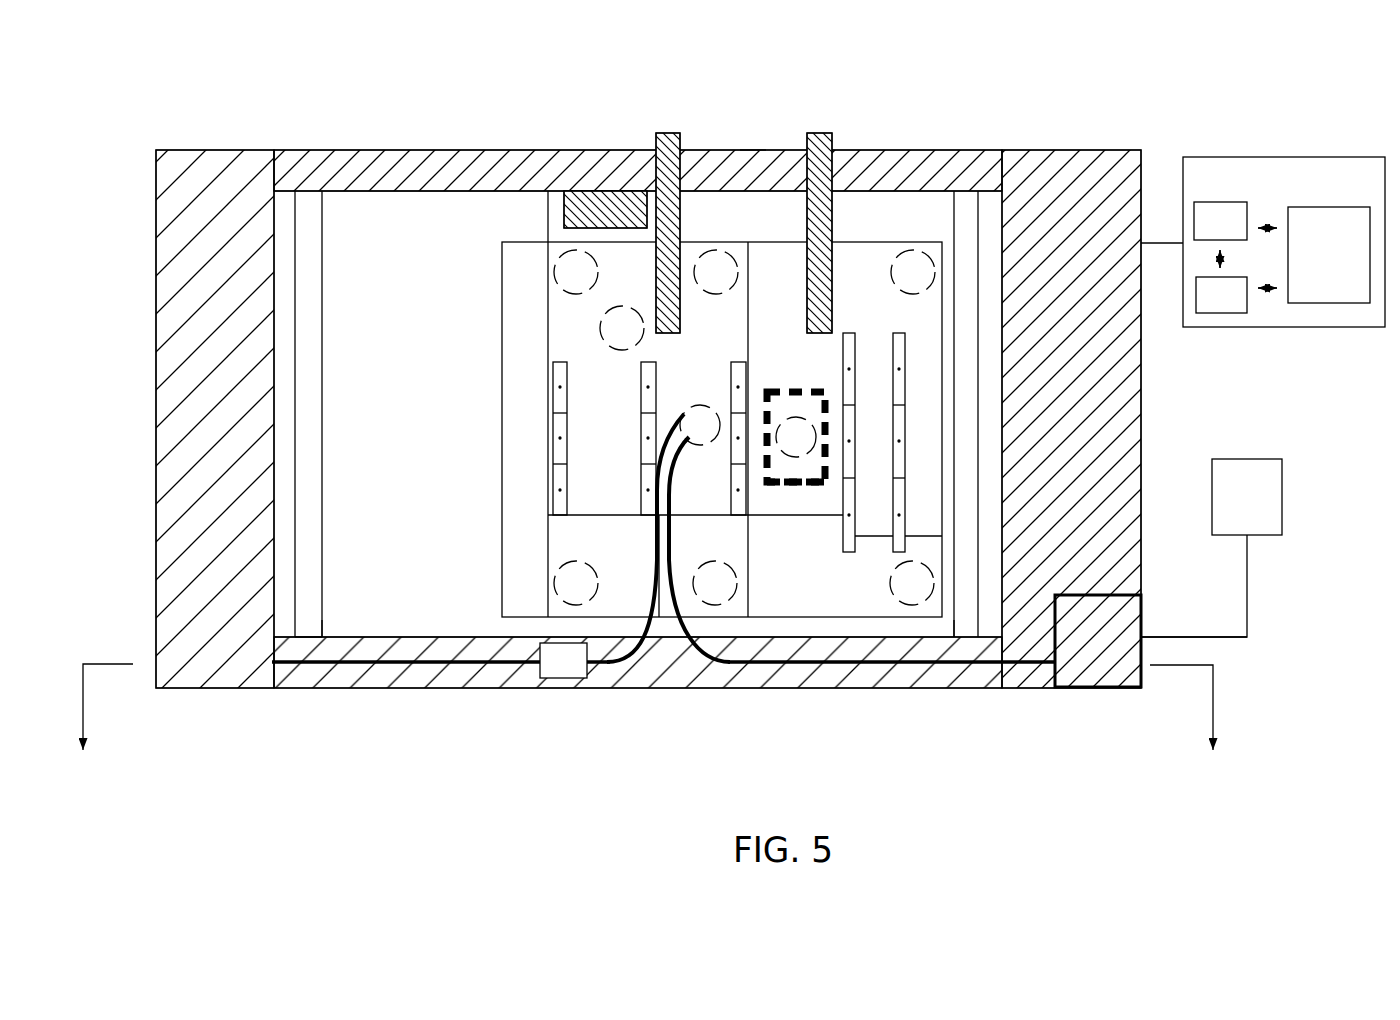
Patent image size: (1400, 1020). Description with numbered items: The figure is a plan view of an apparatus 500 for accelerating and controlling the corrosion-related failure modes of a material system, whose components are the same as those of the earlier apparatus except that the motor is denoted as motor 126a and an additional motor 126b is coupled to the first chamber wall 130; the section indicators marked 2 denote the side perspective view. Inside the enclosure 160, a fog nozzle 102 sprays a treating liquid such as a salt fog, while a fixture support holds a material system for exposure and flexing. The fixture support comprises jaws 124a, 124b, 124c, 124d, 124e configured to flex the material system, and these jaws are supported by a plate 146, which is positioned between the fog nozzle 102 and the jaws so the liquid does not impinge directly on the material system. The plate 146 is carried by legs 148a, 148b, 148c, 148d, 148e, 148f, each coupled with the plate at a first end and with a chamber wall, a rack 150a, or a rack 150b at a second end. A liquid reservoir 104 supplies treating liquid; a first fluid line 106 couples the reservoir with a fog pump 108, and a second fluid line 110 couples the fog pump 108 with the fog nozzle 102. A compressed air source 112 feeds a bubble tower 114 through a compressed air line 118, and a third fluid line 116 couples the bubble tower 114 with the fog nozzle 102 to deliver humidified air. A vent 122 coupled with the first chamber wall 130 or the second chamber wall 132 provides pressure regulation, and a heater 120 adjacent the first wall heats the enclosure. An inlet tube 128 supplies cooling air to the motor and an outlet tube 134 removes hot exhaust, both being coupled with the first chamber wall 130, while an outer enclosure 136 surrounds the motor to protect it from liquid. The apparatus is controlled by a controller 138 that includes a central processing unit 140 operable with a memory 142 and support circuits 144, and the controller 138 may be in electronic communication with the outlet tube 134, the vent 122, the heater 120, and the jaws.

The apparatus 500 is at (233, 63).
The liquid reservoir 104 is at (190, 349).
The first chamber wall 130 is at (372, 149).
The second chamber wall 132 is at (737, 690).
The third fluid line 116 is at (948, 672).
The first fluid line 106 is at (483, 670).
The heater 120 is at (308, 616).
The rack 150a is at (412, 592).
The rack 150b is at (862, 623).
The enclosure 160 is at (632, 573).
The vent 122 is at (631, 312).
The inlet tube 128 is at (673, 147).
The outlet tube 134 is at (832, 143).
The motor 126a is at (753, 152).
The motor 126b is at (782, 450).
The plate 146 is at (575, 320).
The jaw 124a is at (538, 458).
The jaw 124b is at (638, 458).
The jaw 124c is at (730, 500).
The jaw 124d is at (858, 354).
The jaw 124e is at (908, 366).
The leg 148a is at (562, 285).
The leg 148b is at (702, 285).
The leg 148c is at (899, 285).
The leg 148d is at (562, 596).
The leg 148e is at (701, 596).
The leg 148f is at (898, 596).
The fog nozzle 102 is at (688, 438).
The second fluid line 110 is at (648, 630).
The outer enclosure 136 is at (781, 487).
The fog pump 108 is at (578, 672).
The bubble tower 114 is at (1082, 646).
The compressed air source 112 is at (1232, 509).
The compressed air line 118 is at (1237, 648).
The controller 138 is at (1262, 193).
The central processing unit 140 is at (1205, 234).
The memory 142 is at (1206, 308).
The support circuits 144 is at (1314, 268).
The section line 2 is at (649, 726).